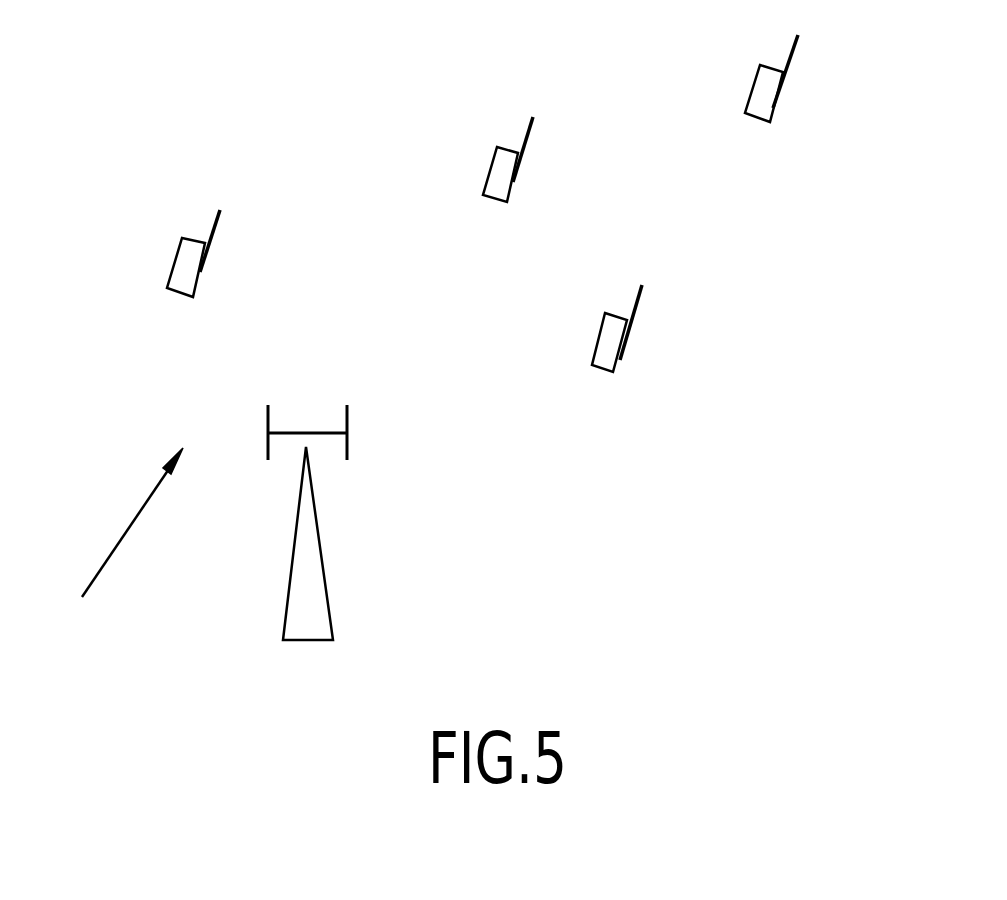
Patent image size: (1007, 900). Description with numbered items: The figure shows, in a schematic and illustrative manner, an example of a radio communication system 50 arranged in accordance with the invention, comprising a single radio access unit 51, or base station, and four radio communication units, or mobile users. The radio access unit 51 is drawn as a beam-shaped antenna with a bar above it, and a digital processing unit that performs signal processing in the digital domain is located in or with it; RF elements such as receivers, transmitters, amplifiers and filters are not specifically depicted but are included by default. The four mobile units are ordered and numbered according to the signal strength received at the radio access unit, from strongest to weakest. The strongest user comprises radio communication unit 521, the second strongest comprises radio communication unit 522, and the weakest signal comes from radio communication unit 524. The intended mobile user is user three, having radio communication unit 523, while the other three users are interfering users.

The radio communication system 50 is at (83, 653).
The radio access unit 51 is at (303, 597).
The radio communication unit 521 is at (187, 272).
The radio communication unit 522 is at (608, 352).
The radio communication unit 523 is at (505, 182).
The radio communication unit 524 is at (763, 102).